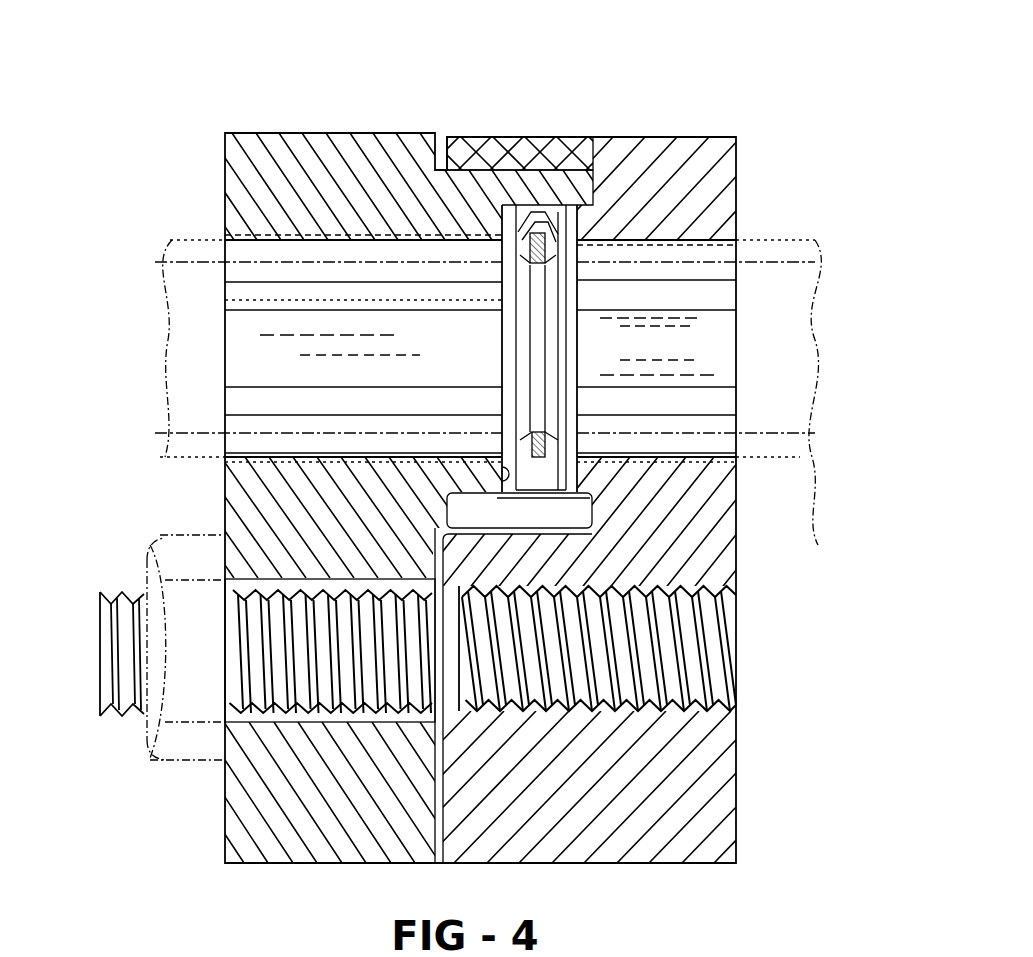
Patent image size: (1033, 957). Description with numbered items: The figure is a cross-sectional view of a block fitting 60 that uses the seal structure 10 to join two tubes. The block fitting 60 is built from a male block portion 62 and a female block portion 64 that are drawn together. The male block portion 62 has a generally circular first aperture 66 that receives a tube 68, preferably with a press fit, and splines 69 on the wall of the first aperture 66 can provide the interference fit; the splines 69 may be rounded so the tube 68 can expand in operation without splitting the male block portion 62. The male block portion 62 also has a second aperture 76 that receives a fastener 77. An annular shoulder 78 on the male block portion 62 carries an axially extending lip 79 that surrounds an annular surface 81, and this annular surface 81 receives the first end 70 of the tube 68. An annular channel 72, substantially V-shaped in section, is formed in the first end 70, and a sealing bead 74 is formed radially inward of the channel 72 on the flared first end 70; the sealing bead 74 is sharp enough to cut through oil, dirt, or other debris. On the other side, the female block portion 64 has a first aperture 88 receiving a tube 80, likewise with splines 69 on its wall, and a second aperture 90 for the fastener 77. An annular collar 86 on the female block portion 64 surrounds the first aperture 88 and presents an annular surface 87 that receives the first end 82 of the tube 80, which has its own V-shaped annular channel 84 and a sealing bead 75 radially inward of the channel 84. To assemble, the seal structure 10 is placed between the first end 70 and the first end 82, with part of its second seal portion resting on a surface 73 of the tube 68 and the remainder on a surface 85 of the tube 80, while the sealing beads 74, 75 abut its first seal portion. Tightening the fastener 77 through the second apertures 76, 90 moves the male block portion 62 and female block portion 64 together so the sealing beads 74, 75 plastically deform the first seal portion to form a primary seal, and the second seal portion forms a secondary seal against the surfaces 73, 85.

The seal structure 10 is at (525, 342).
The block fitting 60 is at (722, 63).
The male block portion 62 is at (240, 150).
The female block portion 64 is at (718, 144).
The first aperture 66 is at (340, 238).
The tube 68 is at (152, 468).
The splines 69 is at (235, 373).
The first end 70 is at (512, 225).
The annular channel 72 is at (534, 212).
The surface 73 is at (540, 498).
The sealing bead 74 is at (478, 300).
The sealing bead 75 is at (740, 282).
The second aperture 76 is at (262, 650).
The fastener 77 is at (130, 625).
The annular shoulder 78 is at (512, 531).
The lip 79 is at (552, 496).
The tube 80 is at (787, 468).
The annular surface 81 is at (500, 473).
The first end 82 is at (572, 217).
The annular channel 84 is at (556, 222).
The surface 85 is at (548, 463).
The annular collar 86 is at (536, 140).
The annular surface 87 is at (600, 223).
The first aperture 88 is at (693, 240).
The second aperture 90 is at (712, 663).